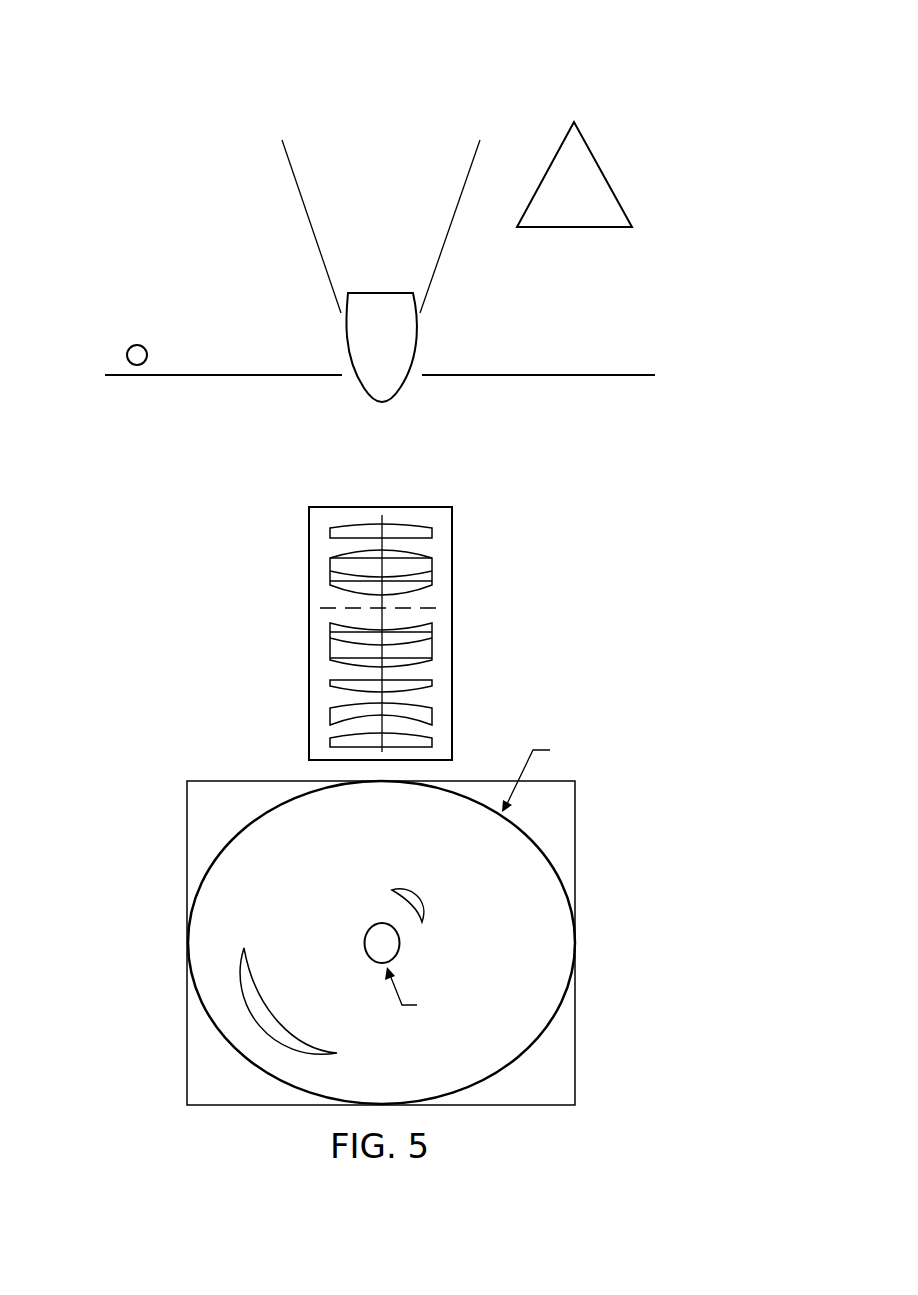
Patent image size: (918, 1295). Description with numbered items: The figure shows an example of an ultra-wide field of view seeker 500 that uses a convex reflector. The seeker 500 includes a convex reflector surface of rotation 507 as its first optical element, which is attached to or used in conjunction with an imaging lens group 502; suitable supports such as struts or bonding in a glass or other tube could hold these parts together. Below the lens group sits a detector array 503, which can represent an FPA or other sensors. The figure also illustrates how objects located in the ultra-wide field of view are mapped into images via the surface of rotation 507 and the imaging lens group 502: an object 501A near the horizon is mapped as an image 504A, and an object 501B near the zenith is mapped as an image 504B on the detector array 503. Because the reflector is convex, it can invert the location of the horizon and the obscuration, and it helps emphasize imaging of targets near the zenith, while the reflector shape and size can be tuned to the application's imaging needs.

The ultra-wide field of view seeker 500 is at (195, 67).
The object 501A is at (127, 350).
The object 501B is at (605, 173).
The convex reflector surface of rotation 507 is at (326, 343).
The imaging lens group 502 is at (309, 632).
The detector array 503 is at (178, 1040).
The image 504A is at (292, 990).
The image 504B is at (438, 872).